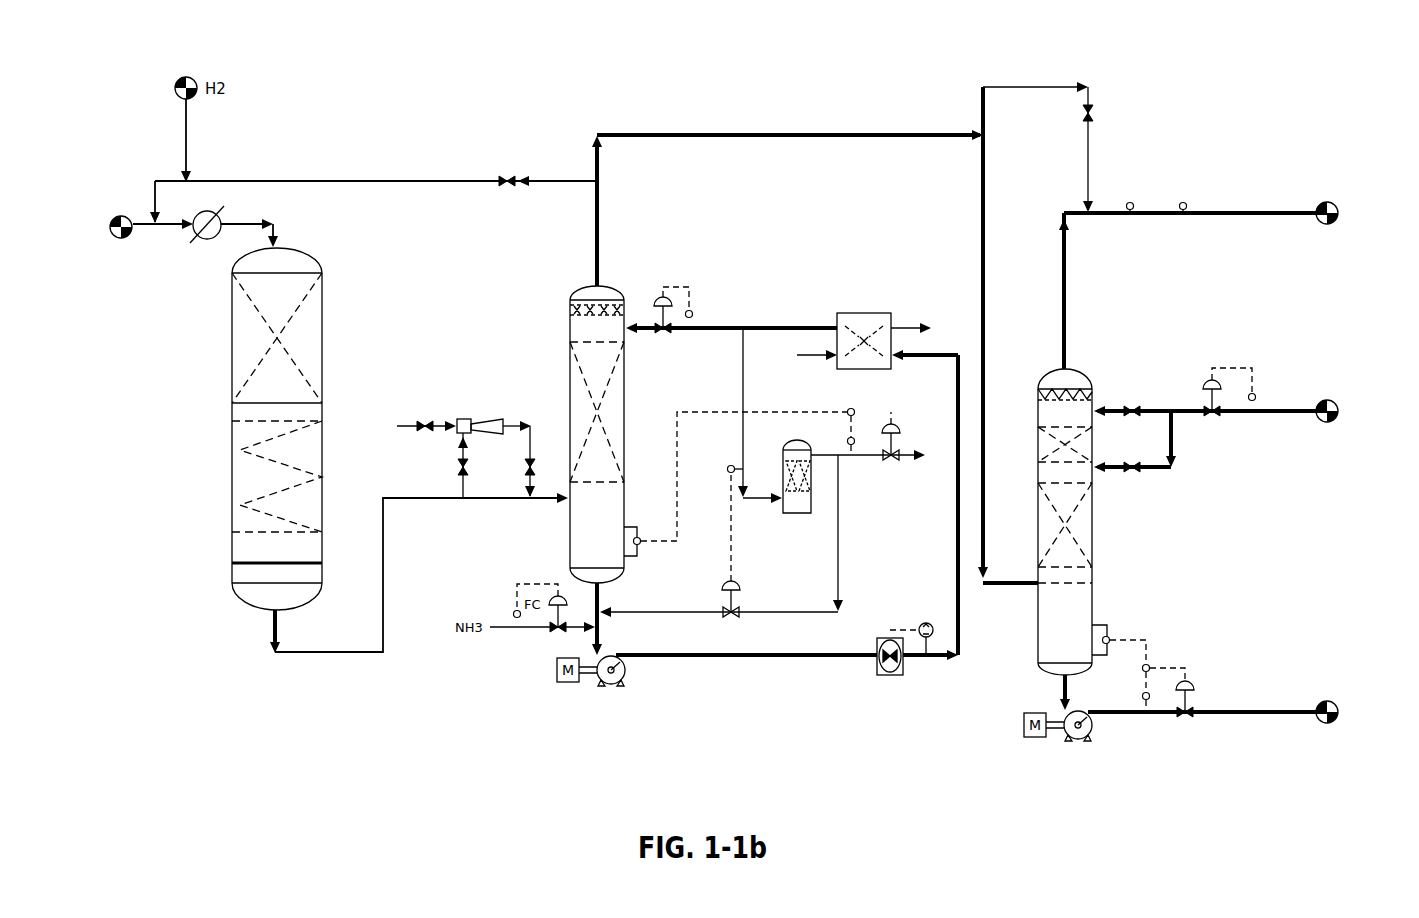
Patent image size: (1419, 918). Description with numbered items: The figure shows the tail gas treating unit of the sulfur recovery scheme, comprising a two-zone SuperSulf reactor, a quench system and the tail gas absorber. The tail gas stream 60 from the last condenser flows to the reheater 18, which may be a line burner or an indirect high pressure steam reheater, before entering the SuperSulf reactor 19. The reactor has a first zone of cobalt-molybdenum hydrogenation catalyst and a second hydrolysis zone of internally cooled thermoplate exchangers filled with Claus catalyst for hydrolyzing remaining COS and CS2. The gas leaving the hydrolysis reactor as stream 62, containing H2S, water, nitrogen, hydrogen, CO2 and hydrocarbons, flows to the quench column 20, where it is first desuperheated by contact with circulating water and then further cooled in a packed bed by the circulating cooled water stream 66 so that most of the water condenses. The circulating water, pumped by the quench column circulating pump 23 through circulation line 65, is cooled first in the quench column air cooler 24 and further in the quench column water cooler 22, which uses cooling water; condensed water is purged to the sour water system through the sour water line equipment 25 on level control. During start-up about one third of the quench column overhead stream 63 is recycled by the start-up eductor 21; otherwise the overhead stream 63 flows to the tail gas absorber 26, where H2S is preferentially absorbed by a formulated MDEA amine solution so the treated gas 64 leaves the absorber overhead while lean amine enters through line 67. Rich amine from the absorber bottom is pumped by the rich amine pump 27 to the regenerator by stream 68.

The tail gas stream 60 is at (130, 198).
The reheater 18 is at (208, 247).
The SuperSulf reactor 19 is at (333, 295).
The gas leaving the hydrolysis reactor stream 62 is at (348, 647).
The start-up eductor 21 is at (459, 410).
The quench column 20 is at (566, 288).
The quench column overhead stream 63 is at (733, 128).
The circulating cooled water stream 66 is at (781, 318).
The quench column water cooler 22 is at (858, 304).
The sour water filter 25 is at (789, 440).
The quench water pump 23 is at (550, 669).
The quench water circulation line 65 is at (800, 646).
The quench column air cooler 24 is at (879, 637).
The tail gas absorber 26 is at (1045, 369).
The treated gas line to incinerator 64 is at (1270, 207).
The lean amine feed line 67 is at (1297, 400).
The rich amine pump 27 is at (1032, 704).
The rich amine stream 68 is at (1266, 703).